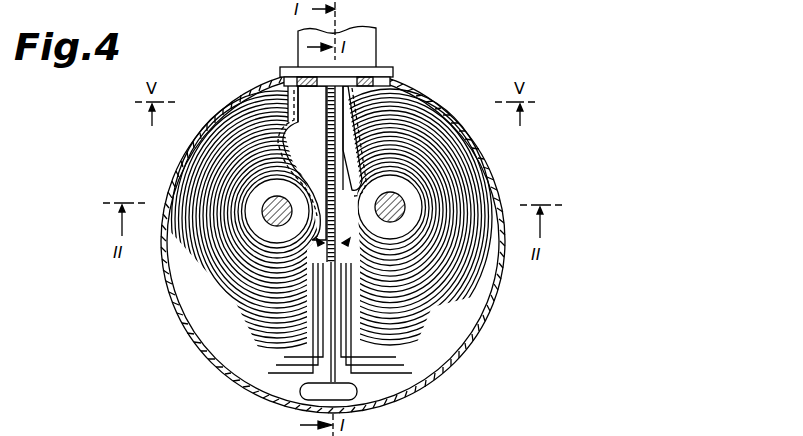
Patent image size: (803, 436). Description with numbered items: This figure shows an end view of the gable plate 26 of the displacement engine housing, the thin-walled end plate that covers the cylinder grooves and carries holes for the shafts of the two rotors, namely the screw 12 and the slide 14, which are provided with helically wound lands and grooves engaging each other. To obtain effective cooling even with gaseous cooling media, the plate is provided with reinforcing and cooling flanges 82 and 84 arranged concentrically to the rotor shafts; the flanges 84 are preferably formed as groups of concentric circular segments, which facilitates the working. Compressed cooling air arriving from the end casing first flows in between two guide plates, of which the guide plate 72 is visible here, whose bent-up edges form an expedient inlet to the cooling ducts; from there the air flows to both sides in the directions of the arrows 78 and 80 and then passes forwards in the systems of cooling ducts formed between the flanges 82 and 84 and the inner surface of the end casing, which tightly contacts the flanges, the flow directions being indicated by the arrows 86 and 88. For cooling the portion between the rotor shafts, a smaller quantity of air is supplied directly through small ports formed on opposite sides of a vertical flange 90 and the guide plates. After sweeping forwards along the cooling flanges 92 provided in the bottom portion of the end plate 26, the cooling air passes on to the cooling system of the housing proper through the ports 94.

The screw 12 is at (398, 193).
The slide 14 is at (284, 196).
The gable plate 26 is at (212, 306).
The guide plate 72 is at (322, 166).
The arrow 78 is at (330, 142).
The arrow 80 is at (340, 138).
The cooling flange 82 is at (250, 178).
The cooling flange 84 is at (462, 210).
The arrow 86 is at (287, 233).
The arrow 88 is at (386, 80).
The vertical flange 90 is at (337, 214).
The cooling flange 92 is at (262, 322).
The port 94 is at (312, 392).